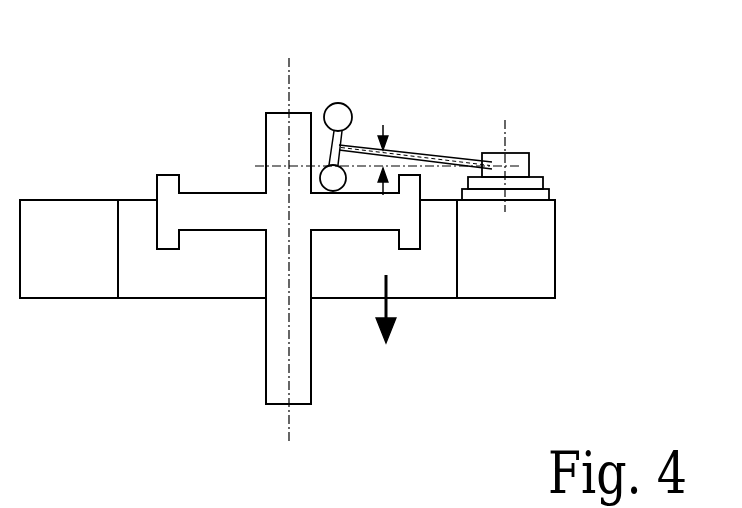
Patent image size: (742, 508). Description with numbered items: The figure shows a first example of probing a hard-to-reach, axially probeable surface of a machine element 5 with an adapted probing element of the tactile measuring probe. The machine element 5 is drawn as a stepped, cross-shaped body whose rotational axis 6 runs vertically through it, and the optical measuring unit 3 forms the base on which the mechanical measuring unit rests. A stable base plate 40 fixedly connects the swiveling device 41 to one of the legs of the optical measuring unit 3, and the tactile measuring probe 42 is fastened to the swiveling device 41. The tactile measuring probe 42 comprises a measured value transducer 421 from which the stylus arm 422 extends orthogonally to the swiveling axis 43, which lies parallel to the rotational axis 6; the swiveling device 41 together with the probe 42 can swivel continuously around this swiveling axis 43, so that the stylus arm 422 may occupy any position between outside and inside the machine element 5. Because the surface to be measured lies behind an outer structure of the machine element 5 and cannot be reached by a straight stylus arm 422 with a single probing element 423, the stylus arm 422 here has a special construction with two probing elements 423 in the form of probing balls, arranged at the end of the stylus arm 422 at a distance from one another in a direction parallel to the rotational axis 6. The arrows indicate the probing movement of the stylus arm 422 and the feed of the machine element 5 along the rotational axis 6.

The optical measuring unit 3 is at (210, 273).
The machine element 5 is at (302, 333).
The rotational axis 6 is at (287, 93).
The base plate 40 is at (540, 193).
The swiveling device 41 is at (535, 183).
The tactile measuring probe 42 is at (513, 121).
The swiveling axis 43 is at (505, 120).
The measured value transducer 421 is at (522, 172).
The stylus arm 422 is at (461, 157).
The probing element 423 is at (343, 138).